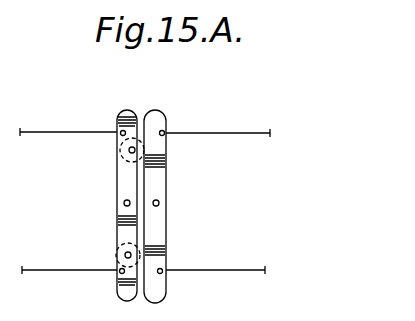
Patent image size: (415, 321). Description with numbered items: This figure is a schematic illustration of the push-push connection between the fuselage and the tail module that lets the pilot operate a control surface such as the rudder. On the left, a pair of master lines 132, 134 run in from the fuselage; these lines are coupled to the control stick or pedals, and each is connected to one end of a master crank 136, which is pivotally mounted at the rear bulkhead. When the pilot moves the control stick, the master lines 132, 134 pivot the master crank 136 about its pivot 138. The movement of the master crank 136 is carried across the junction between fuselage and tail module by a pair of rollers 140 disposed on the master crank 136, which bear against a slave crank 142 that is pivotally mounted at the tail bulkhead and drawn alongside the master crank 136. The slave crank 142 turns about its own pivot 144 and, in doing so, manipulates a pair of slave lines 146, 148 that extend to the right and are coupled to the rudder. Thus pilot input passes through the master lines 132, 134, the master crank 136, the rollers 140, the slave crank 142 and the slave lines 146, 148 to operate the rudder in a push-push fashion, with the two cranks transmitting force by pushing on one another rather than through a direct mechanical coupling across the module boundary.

The master line 132 is at (60, 131).
The master line 134 is at (58, 272).
The master crank 136 is at (117, 172).
The pivot 138 is at (117, 197).
The rollers 140 is at (142, 124).
The slave crank 142 is at (166, 220).
The pivot 144 is at (160, 201).
The slave line 146 is at (220, 133).
The slave line 148 is at (230, 272).